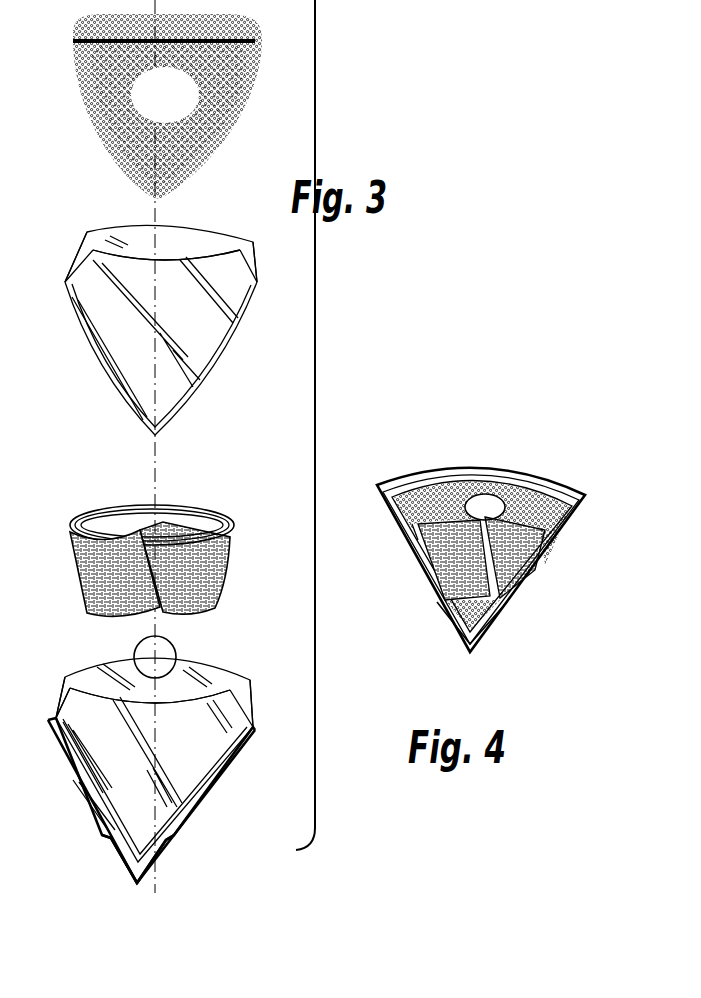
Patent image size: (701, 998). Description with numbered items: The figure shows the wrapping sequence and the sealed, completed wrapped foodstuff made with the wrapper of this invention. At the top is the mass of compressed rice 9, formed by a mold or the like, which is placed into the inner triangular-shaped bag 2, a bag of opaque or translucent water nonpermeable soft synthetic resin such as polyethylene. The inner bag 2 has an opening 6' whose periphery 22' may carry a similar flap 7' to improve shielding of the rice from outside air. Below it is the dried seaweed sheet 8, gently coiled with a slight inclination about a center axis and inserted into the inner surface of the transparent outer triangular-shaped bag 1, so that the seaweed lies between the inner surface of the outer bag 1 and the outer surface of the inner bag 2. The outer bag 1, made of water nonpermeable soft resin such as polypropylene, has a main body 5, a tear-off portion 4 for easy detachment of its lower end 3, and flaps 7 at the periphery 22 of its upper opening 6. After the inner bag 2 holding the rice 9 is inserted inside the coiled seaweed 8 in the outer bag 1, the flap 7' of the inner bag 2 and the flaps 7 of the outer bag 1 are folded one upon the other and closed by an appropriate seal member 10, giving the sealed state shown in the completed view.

In FIG. 3, the outer triangular-shaped bag 1 is at (205, 745).
In FIG. 4, the outer triangular-shaped bag 1 is at (543, 588).
In FIG. 3, the inner triangular-shaped bag 2 is at (193, 353).
In FIG. 4, the inner triangular-shaped bag 2 is at (460, 470).
In FIG. 3, the lower end 3 is at (122, 857).
In FIG. 3, the tear-off portion 4 is at (167, 838).
In FIG. 4, the tear-off portion 4 is at (437, 602).
In FIG. 3, the main body 5 is at (185, 780).
In FIG. 3, the upper opening 6 is at (144, 666).
In FIG. 3, the opening 6' is at (166, 226).
In FIG. 3, the flaps 7 is at (52, 696).
In FIG. 4, the flaps 7 is at (400, 542).
In FIG. 3, the flap 7' is at (235, 232).
In FIG. 3, the dried seaweed sheet 8 is at (234, 515).
In FIG. 4, the dried seaweed sheet 8 is at (530, 580).
In FIG. 3, the mass of compressed rice 9 is at (137, 118).
In FIG. 3, the seal member 10 is at (163, 652).
In FIG. 4, the seal member 10 is at (493, 503).
In FIG. 3, the periphery 22 is at (250, 682).
In FIG. 3, the periphery 22' is at (57, 252).